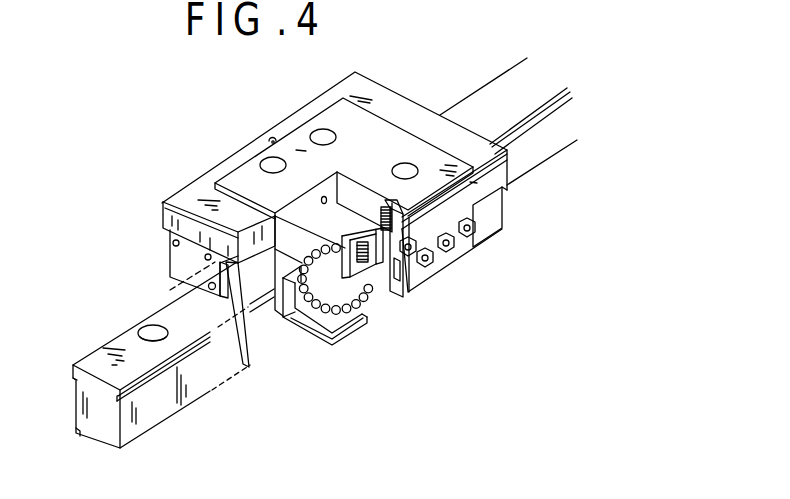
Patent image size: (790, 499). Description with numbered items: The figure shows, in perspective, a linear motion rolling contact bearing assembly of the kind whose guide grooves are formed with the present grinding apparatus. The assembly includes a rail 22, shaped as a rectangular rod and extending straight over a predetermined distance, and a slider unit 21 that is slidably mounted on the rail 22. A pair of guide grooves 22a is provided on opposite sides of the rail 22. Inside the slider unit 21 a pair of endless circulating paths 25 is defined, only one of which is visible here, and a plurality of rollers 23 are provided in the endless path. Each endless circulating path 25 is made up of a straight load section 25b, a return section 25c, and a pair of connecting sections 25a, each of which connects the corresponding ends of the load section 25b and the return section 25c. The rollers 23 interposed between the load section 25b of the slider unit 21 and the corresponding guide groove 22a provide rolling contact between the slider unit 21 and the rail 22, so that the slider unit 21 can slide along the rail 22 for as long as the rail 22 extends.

The slider unit 21 is at (307, 219).
The rail 22 is at (325, 253).
The guide groove 22a is at (108, 400).
The rollers 23 is at (345, 319).
The endless circulating path 25 is at (346, 289).
The connecting section 25a is at (325, 339).
The straight load section 25b is at (354, 194).
The return section 25c is at (422, 266).